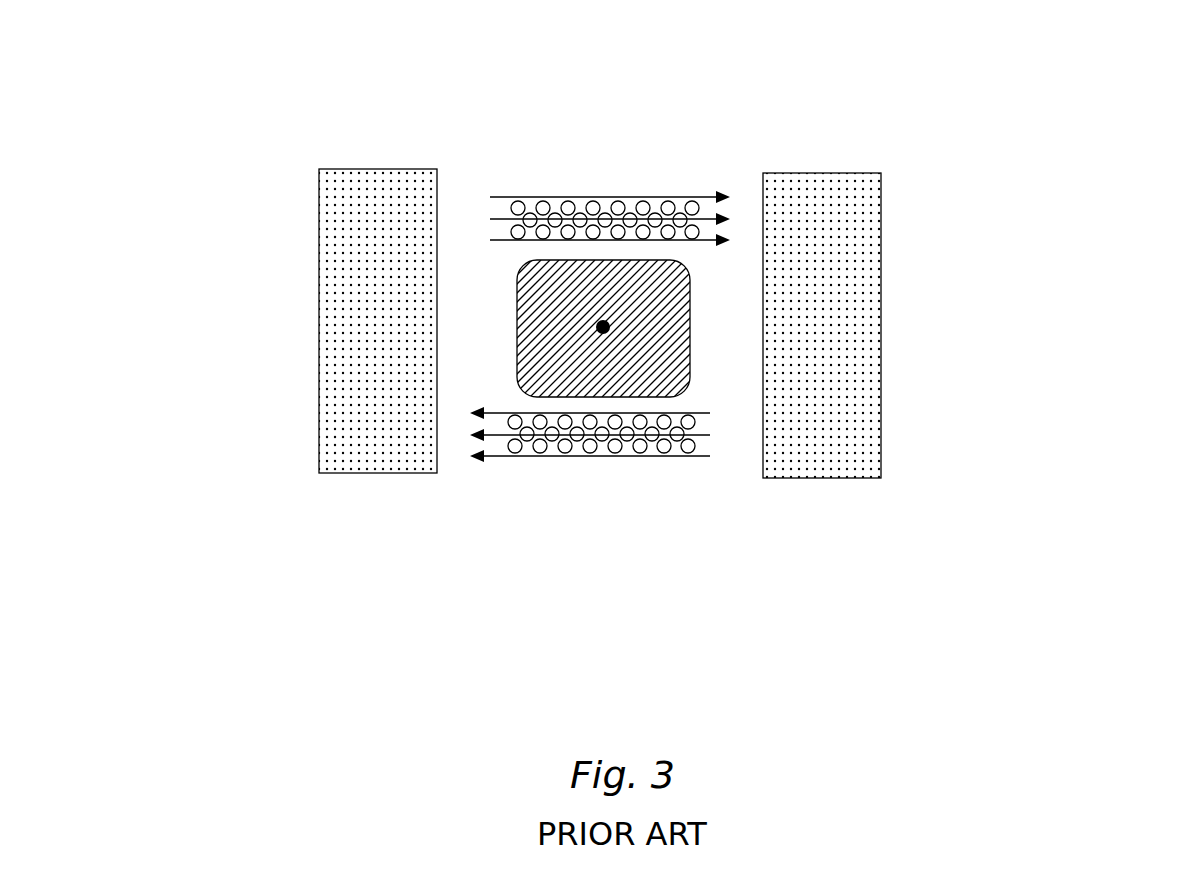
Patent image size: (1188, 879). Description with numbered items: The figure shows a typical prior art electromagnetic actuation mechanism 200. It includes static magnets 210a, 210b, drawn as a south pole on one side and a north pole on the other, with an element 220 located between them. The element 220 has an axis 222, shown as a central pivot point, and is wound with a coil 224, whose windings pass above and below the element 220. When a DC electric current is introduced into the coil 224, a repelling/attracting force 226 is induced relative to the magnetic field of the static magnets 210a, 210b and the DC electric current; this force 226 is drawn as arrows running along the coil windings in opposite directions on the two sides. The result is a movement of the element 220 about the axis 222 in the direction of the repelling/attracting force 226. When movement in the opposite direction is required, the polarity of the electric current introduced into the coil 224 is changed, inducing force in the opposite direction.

The electromagnetic actuation mechanism 200 is at (233, 126).
The magnet 210a is at (338, 318).
The magnet 210b is at (855, 328).
The element 220 is at (588, 285).
The axis 222 is at (606, 334).
The coil 224 is at (690, 208).
The repelling/attracting force 226 is at (722, 180).